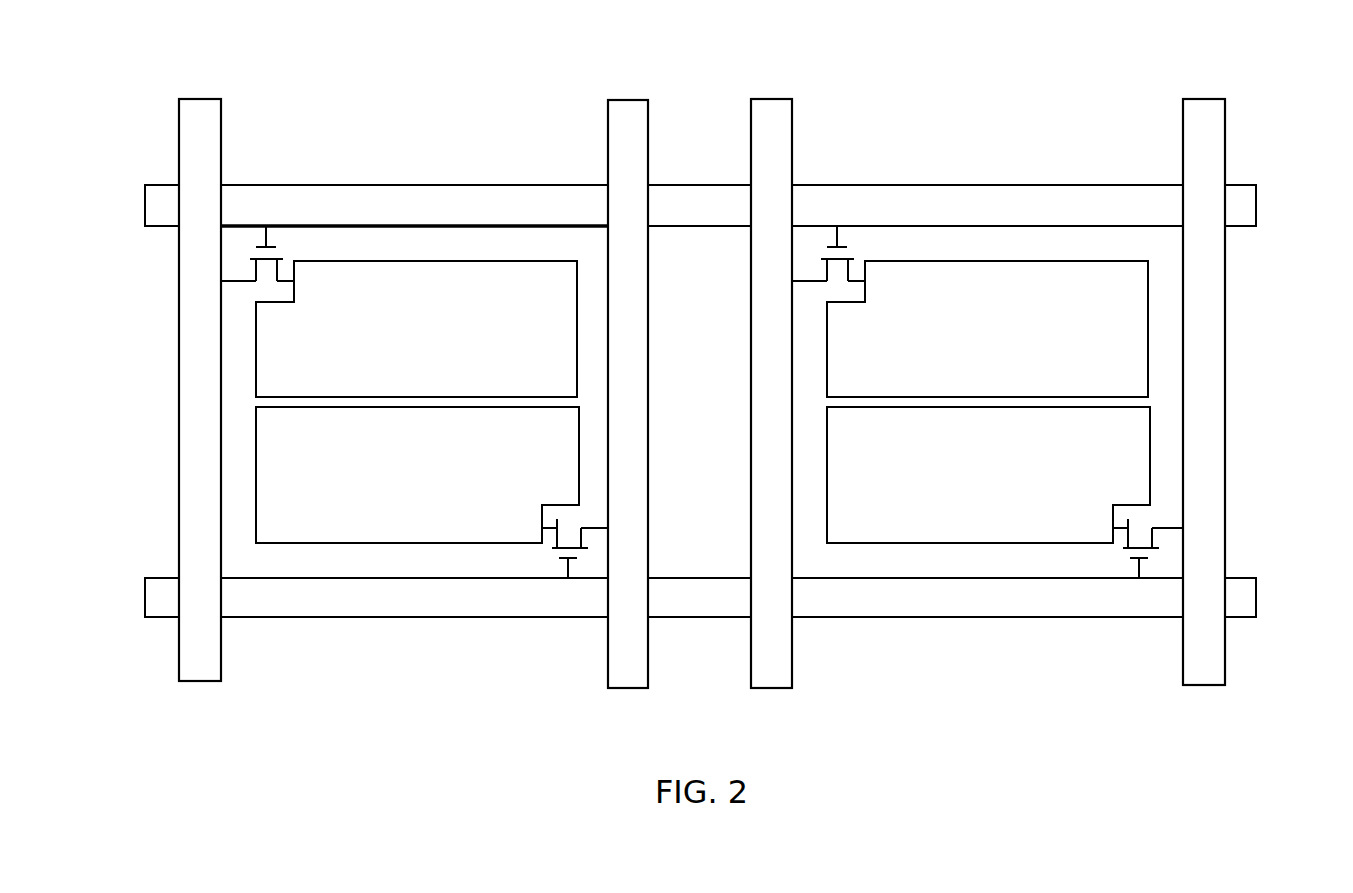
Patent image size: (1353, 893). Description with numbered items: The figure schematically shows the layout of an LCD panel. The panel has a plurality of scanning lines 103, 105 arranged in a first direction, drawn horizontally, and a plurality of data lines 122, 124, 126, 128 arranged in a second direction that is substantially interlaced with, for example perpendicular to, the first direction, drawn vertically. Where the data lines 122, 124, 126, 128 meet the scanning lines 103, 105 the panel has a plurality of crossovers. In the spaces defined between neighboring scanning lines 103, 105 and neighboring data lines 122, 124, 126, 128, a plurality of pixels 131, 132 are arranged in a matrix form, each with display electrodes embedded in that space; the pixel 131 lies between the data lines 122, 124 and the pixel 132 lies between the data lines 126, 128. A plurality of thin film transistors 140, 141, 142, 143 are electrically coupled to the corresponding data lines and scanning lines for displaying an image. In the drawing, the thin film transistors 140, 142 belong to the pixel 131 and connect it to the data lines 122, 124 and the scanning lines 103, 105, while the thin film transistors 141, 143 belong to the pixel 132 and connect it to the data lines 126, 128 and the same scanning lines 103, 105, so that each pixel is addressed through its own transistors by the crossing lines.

The scanning line 103 is at (1237, 186).
The scanning line 105 is at (1237, 578).
The data line 122 is at (201, 95).
The data line 124 is at (632, 100).
The data line 126 is at (775, 100).
The data line 128 is at (1207, 100).
The pixel 131 is at (225, 411).
The pixel 132 is at (1180, 397).
The thin film transistor 140 is at (252, 272).
The thin film transistor 141 is at (822, 272).
The thin film transistor 142 is at (595, 523).
The thin film transistor 143 is at (1165, 523).